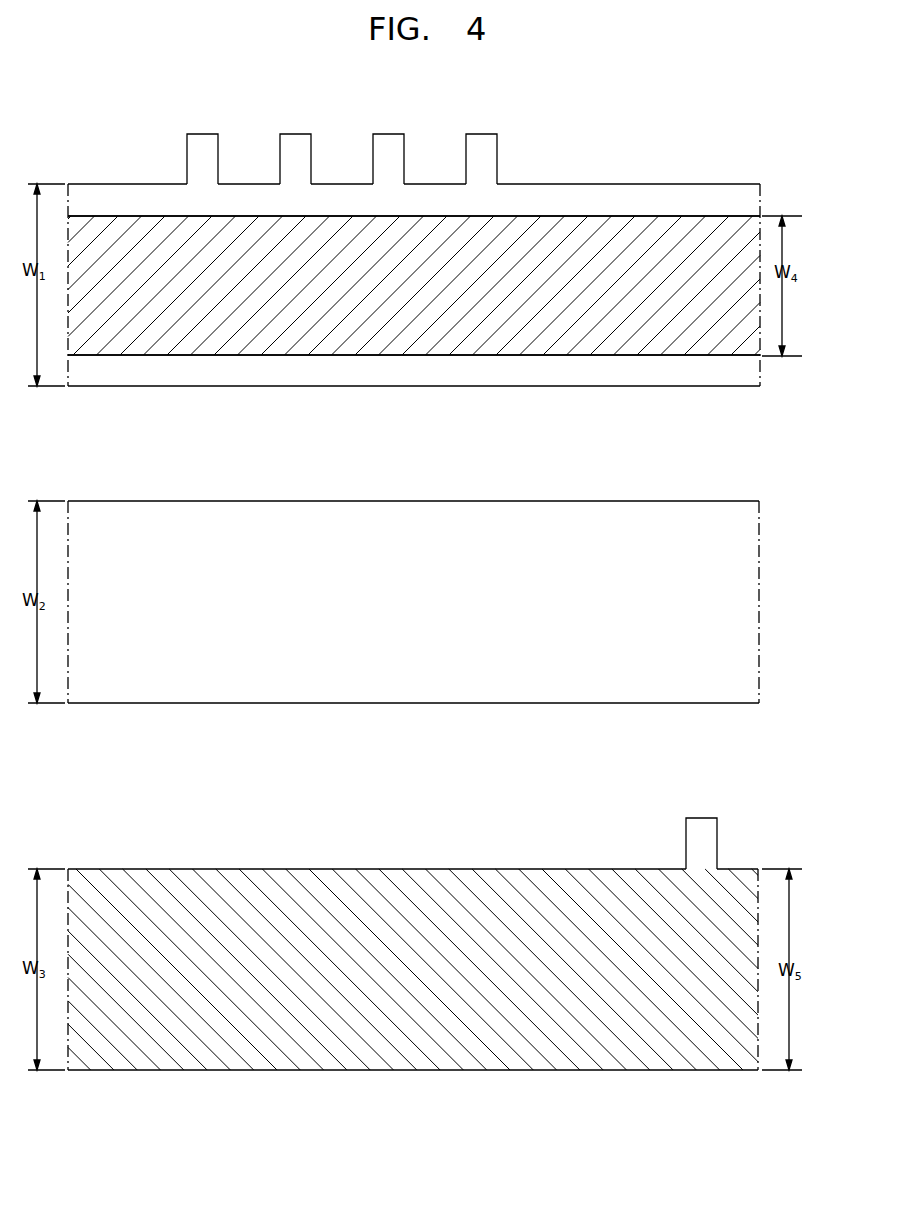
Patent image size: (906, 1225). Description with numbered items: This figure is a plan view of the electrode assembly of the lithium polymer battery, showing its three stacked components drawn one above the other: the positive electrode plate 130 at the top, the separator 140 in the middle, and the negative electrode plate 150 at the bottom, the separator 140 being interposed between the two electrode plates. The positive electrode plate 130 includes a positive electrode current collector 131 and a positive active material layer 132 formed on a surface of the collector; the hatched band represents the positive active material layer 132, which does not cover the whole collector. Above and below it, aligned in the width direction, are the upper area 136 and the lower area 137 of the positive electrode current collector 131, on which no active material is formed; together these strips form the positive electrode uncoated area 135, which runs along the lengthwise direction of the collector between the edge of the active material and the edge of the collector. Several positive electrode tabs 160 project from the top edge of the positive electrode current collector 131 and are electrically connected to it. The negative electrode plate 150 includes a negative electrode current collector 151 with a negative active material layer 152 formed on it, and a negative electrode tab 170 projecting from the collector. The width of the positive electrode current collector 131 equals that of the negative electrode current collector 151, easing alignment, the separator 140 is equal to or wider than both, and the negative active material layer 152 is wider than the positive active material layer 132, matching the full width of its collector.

The positive electrode plate 130 is at (414, 236).
The positive electrode current collector 131 is at (118, 183).
The positive active material layer 132 is at (327, 232).
The positive electrode uncoated area 135 is at (414, 239).
The upper area 136 is at (528, 197).
The lower area 137 is at (557, 370).
The positive electrode tab 160 is at (197, 137).
The separator 140 is at (628, 486).
The negative electrode plate 150 is at (413, 911).
The negative electrode current collector 151 is at (195, 868).
The negative active material layer 152 is at (302, 908).
The negative electrode tab 170 is at (703, 830).